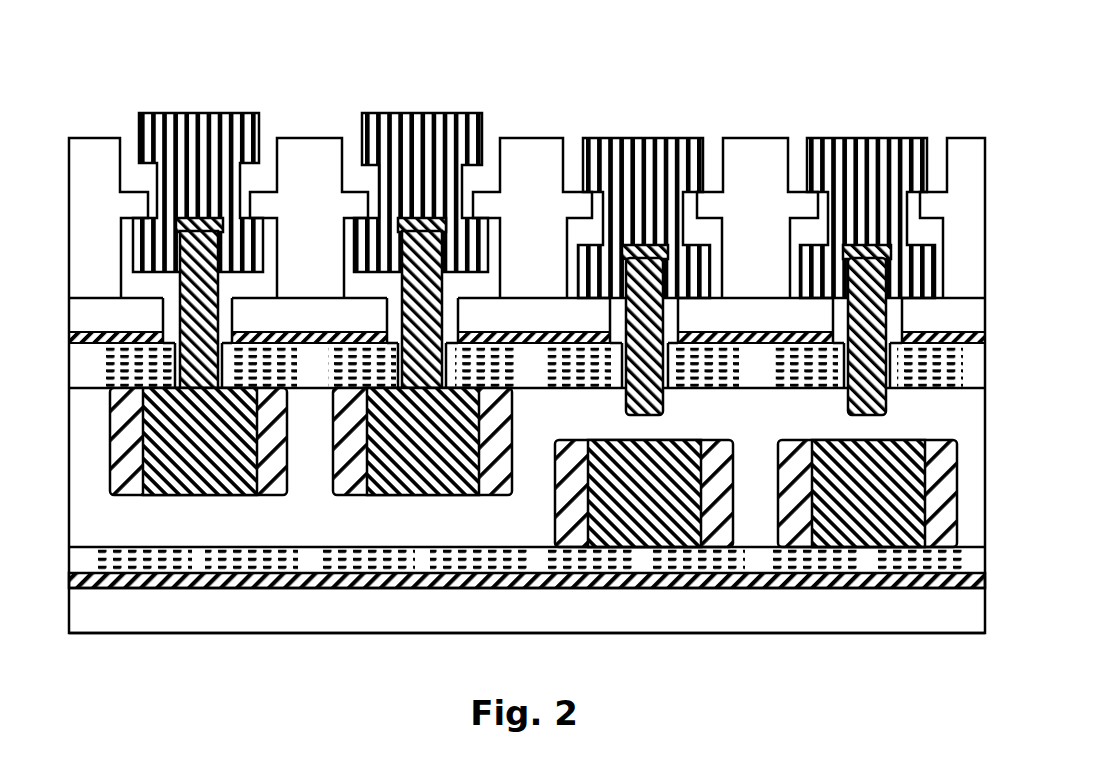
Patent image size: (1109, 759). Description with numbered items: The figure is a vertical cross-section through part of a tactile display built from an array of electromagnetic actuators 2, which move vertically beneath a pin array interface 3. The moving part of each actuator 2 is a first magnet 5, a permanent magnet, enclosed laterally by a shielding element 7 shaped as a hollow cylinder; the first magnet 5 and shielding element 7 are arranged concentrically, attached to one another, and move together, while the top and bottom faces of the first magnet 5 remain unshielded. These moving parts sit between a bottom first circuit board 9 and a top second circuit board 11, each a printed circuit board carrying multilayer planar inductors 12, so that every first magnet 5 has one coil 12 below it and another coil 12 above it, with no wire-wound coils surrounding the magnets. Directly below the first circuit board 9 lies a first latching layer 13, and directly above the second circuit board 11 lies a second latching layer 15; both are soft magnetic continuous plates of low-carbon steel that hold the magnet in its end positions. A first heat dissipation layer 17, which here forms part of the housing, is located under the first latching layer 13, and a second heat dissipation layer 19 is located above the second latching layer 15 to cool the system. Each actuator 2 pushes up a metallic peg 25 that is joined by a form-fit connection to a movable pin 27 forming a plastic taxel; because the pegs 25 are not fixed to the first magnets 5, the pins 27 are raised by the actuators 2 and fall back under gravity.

The electromagnetic actuator 2 is at (641, 606).
The pin array interface 3 is at (92, 137).
The first magnet 5 is at (226, 495).
The shielding element 7 is at (512, 402).
The first circuit board 9 is at (198, 565).
The second circuit board 11 is at (102, 378).
The multilayer planar inductor 12 is at (410, 565).
The first latching layer 13 is at (307, 583).
The second latching layer 15 is at (322, 338).
The first heat dissipation layer 17 is at (742, 613).
The second heat dissipation layer 19 is at (300, 300).
The peg 25 is at (848, 404).
The movable pin 27 is at (212, 130).